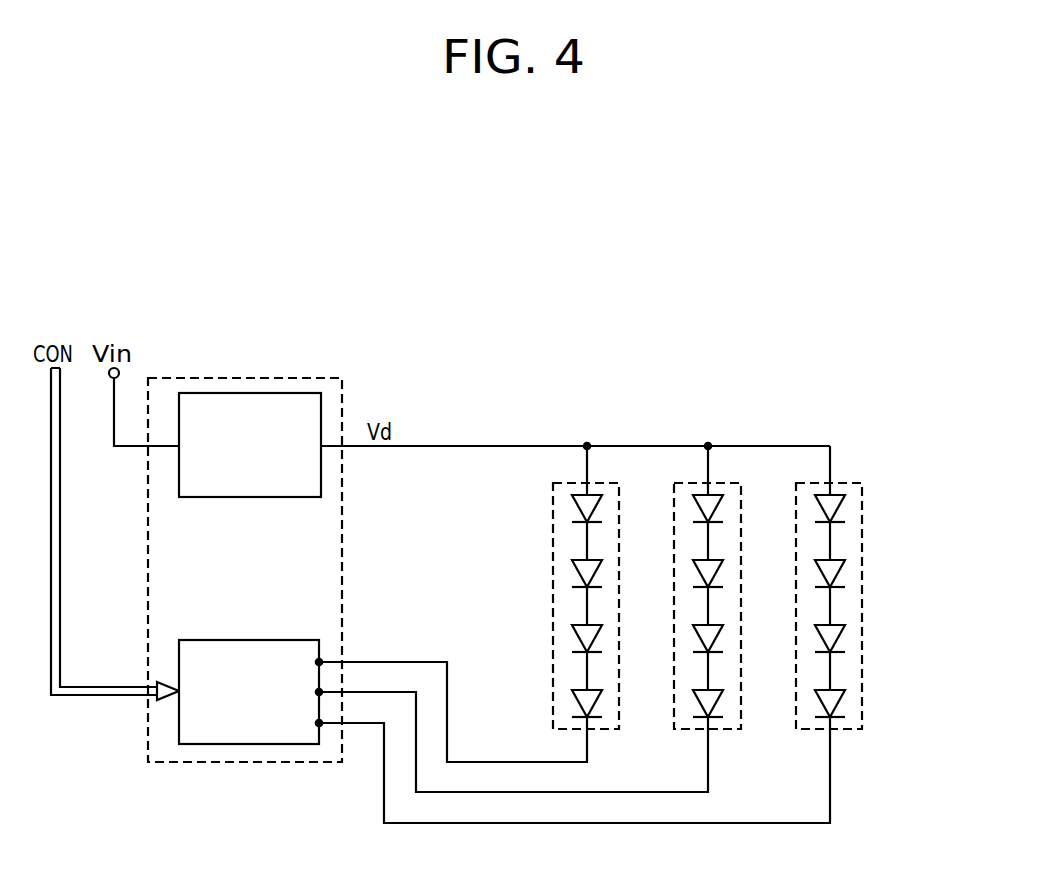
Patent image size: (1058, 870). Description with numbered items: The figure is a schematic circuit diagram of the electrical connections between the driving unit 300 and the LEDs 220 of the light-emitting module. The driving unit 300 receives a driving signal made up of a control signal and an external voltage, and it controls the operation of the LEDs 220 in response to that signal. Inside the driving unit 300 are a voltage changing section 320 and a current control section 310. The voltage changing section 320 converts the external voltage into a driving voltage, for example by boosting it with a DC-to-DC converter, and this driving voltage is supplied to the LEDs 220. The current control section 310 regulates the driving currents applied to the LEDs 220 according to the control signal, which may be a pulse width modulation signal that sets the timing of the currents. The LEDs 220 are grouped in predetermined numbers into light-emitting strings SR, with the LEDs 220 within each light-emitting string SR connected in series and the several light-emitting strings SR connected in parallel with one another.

The driving unit 300 is at (288, 378).
The voltage changing section 320 is at (221, 393).
The current control section 310 is at (250, 745).
The LEDs 220 is at (750, 560).
The light-emitting string SR is at (597, 483).